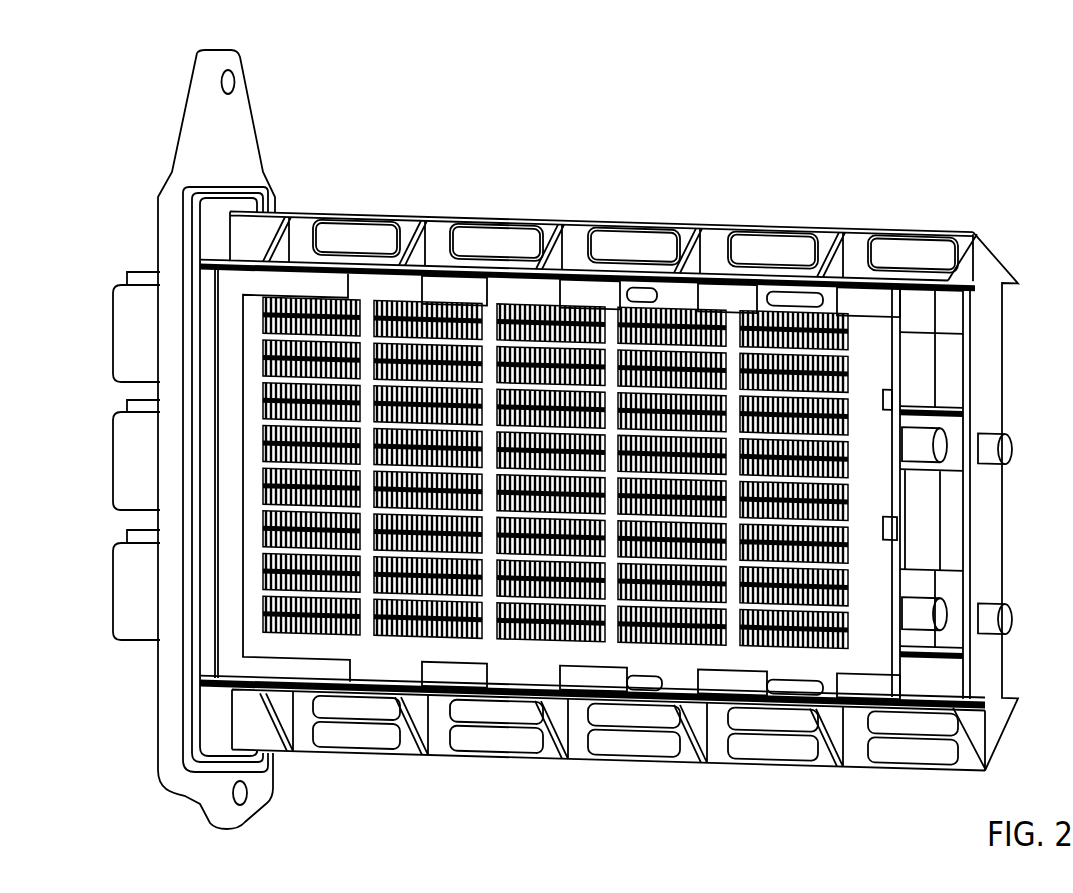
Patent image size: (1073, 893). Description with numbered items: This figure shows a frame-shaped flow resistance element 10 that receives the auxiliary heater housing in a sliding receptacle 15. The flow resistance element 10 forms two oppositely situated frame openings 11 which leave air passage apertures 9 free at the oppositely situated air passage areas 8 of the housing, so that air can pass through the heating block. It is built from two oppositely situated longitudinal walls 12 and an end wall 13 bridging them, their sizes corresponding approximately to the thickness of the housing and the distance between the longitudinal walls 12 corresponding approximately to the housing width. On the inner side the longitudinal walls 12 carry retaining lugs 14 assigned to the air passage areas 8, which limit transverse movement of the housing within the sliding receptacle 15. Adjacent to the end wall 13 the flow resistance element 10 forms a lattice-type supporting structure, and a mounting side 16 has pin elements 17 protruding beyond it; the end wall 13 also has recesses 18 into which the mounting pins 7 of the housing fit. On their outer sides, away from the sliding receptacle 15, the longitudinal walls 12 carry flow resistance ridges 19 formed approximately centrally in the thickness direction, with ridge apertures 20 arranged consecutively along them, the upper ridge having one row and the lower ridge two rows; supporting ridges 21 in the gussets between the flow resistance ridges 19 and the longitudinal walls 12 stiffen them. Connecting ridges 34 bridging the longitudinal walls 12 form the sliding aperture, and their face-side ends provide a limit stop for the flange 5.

The flange 5 is at (263, 167).
The mounting pins 7 is at (947, 432).
The air passage areas 8 is at (525, 300).
The air passage apertures 9 is at (498, 352).
The flow resistance element 10 is at (879, 211).
The frame openings 11 is at (660, 302).
The longitudinal walls 12 is at (778, 283).
The end wall 13 is at (925, 358).
The retaining lugs 14 is at (323, 283).
The sliding receptacle 15 is at (383, 678).
The mounting side 16 is at (1004, 504).
The pin elements 17 is at (1013, 446).
The recesses 18 is at (937, 574).
The flow resistance ridges 19 is at (962, 240).
The ridge apertures 20 is at (328, 232).
The supporting ridges 21 is at (563, 240).
The connecting ridges 34 is at (233, 648).